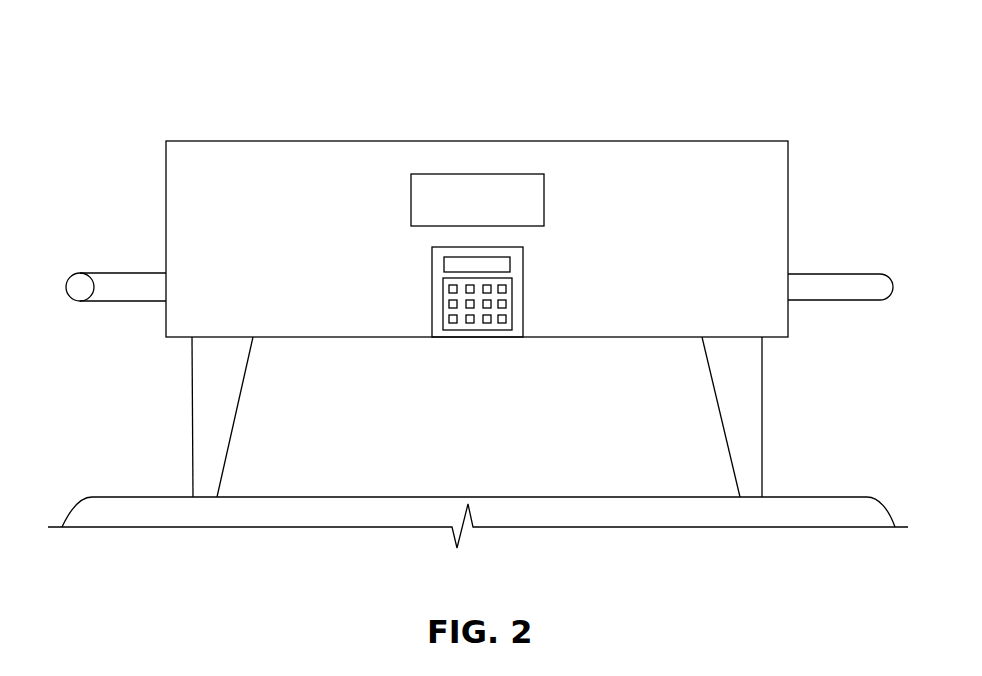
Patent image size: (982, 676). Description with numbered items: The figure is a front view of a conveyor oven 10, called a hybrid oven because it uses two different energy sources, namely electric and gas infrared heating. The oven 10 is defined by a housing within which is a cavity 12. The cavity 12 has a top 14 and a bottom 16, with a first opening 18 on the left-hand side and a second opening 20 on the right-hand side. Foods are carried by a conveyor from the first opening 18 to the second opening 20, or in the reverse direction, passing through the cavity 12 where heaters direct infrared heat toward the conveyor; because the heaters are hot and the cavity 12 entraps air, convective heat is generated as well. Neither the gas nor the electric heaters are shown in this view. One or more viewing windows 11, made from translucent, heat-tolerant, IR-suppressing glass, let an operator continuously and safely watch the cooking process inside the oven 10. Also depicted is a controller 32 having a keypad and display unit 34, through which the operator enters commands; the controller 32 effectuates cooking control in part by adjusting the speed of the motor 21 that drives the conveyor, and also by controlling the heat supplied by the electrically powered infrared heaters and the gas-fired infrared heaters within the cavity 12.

The conveyor oven 10 is at (113, 76).
The viewing window 11 is at (544, 200).
The cavity 12 is at (702, 243).
The top 14 is at (640, 141).
The bottom 16 is at (593, 337).
The first opening 18 is at (107, 282).
The second opening 20 is at (847, 253).
The motor 21 is at (80, 301).
The controller 32 is at (486, 284).
The keypad and display unit 34 is at (444, 265).